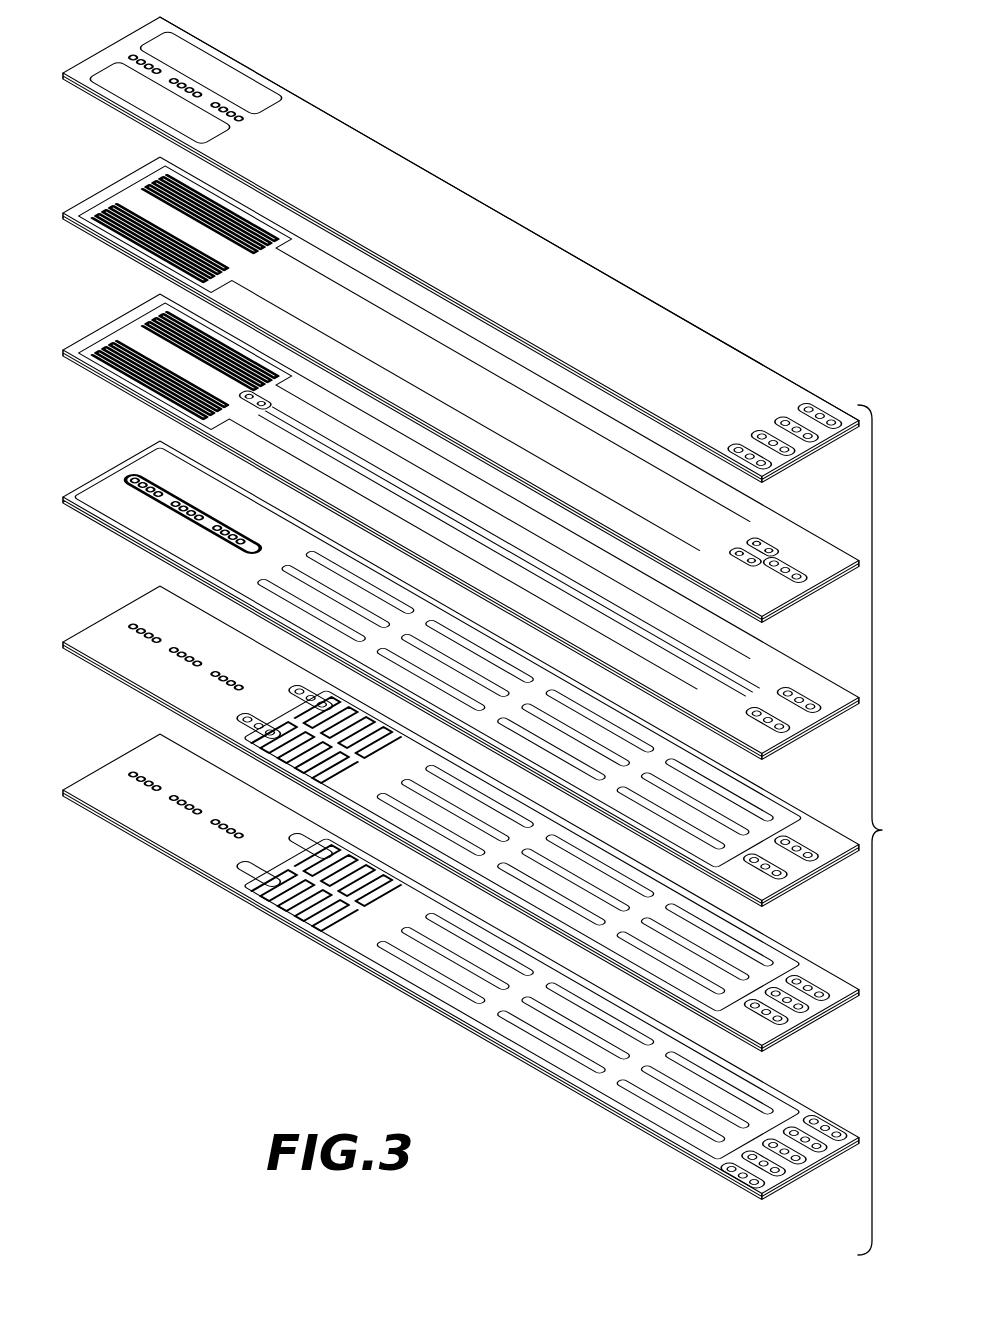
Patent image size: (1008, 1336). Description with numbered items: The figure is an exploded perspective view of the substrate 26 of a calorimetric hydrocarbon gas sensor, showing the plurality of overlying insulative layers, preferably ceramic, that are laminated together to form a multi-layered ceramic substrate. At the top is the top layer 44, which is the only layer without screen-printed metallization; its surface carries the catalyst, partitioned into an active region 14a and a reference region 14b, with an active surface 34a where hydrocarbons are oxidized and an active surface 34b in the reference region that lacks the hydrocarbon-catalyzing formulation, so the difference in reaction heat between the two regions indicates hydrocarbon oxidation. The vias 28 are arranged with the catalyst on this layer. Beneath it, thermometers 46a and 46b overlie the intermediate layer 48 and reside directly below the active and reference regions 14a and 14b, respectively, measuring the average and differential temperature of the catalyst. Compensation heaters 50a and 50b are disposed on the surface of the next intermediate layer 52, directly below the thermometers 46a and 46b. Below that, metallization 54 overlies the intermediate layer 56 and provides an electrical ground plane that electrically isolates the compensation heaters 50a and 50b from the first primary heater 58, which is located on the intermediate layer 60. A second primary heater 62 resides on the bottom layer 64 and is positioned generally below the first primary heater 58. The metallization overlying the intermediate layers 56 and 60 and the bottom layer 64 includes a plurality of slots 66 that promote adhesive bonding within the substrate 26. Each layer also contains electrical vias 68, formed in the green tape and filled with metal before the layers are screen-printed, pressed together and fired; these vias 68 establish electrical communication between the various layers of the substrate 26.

The active region 14a is at (225, 77).
The reference region 14b is at (175, 118).
The substrate 26 is at (887, 830).
The vias 28 is at (130, 57).
The active surface 34a is at (180, 50).
The active surface 34b is at (128, 88).
The top layer 44 is at (483, 218).
The thermometer 46a is at (150, 184).
The thermometer 46b is at (126, 238).
The intermediate layer 48 is at (758, 499).
The compensation heater 50a is at (121, 372).
The compensation heater 50b is at (146, 320).
The intermediate layer 52 is at (760, 652).
The metallization 54 is at (157, 470).
The intermediate layer 56 is at (151, 543).
The first primary heater 58 is at (262, 717).
The intermediate layer 60 is at (802, 953).
The second primary heater 62 is at (253, 898).
The bottom layer 64 is at (797, 1100).
The slots 66 is at (752, 805).
The electrical vias 68 is at (812, 407).